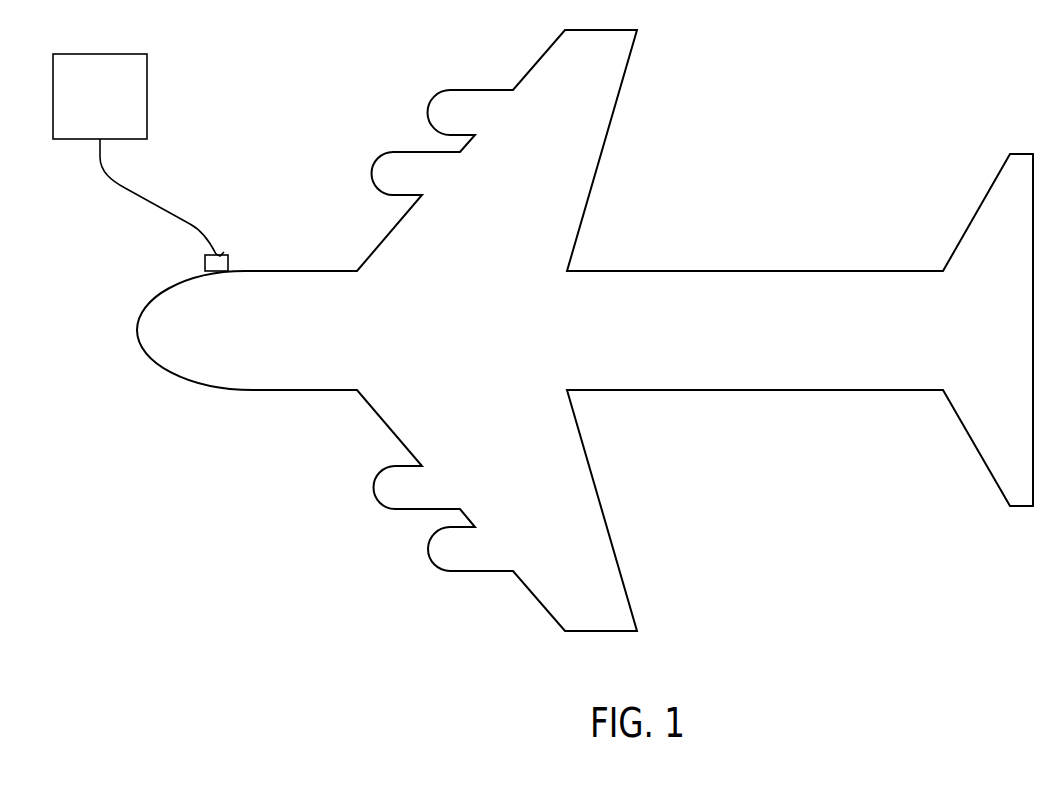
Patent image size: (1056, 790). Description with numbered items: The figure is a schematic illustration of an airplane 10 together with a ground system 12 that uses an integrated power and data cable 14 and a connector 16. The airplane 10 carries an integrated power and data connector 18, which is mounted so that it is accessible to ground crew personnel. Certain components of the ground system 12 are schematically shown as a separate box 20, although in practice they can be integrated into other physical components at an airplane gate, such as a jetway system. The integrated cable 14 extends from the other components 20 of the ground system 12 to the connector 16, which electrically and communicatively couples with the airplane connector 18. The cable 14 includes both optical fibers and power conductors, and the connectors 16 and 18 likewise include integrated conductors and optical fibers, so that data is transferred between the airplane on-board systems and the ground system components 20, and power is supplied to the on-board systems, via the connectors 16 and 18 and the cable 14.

The airplane 10 is at (798, 139).
The ground system 12 is at (216, 82).
The integrated power and data cable 14 is at (152, 201).
The connector 16 is at (222, 252).
The integrated power and data connector 18 is at (205, 262).
The box 20 is at (114, 113).